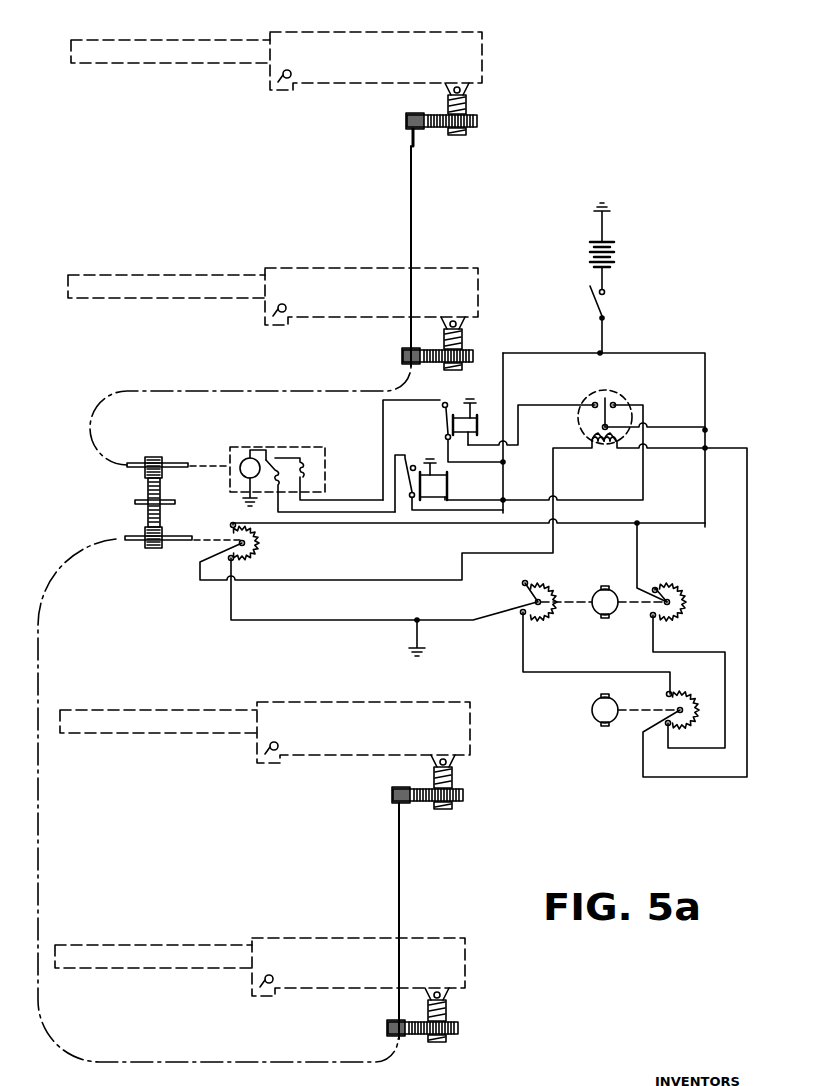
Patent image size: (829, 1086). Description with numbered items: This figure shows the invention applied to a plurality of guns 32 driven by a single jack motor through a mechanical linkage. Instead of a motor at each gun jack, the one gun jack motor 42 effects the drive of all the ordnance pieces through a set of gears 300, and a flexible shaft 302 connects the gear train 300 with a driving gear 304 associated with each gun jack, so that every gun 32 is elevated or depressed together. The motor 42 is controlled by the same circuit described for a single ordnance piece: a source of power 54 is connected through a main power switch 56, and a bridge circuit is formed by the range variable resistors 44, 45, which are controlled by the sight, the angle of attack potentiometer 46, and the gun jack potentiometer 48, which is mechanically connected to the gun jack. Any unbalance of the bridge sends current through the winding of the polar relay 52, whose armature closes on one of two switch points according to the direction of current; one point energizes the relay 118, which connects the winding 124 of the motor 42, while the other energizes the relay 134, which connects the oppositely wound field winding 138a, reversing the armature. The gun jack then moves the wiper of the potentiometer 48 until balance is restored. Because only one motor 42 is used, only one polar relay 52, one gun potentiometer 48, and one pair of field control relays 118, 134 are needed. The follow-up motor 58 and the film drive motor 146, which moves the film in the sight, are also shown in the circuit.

The gun 32 is at (359, 31).
The driving gear 304 is at (406, 122).
The flexible shaft 302 is at (208, 386).
The set of gears 300 is at (144, 494).
The gun jack motor 42 is at (251, 446).
The winding 124 is at (276, 457).
The field winding 138a is at (302, 466).
The relay 118 is at (488, 390).
The relay 134 is at (447, 485).
The polar relay 52 is at (625, 399).
The source of power 54 is at (617, 258).
The main power switch 56 is at (604, 308).
The gun jack potentiometer 48 is at (258, 545).
The range variable resistor 45 is at (532, 583).
The film drive motor 146 is at (618, 562).
The range variable resistor 44 is at (683, 597).
The angle of attack potentiometer 46 is at (712, 682).
The follow-up motor 58 is at (595, 718).